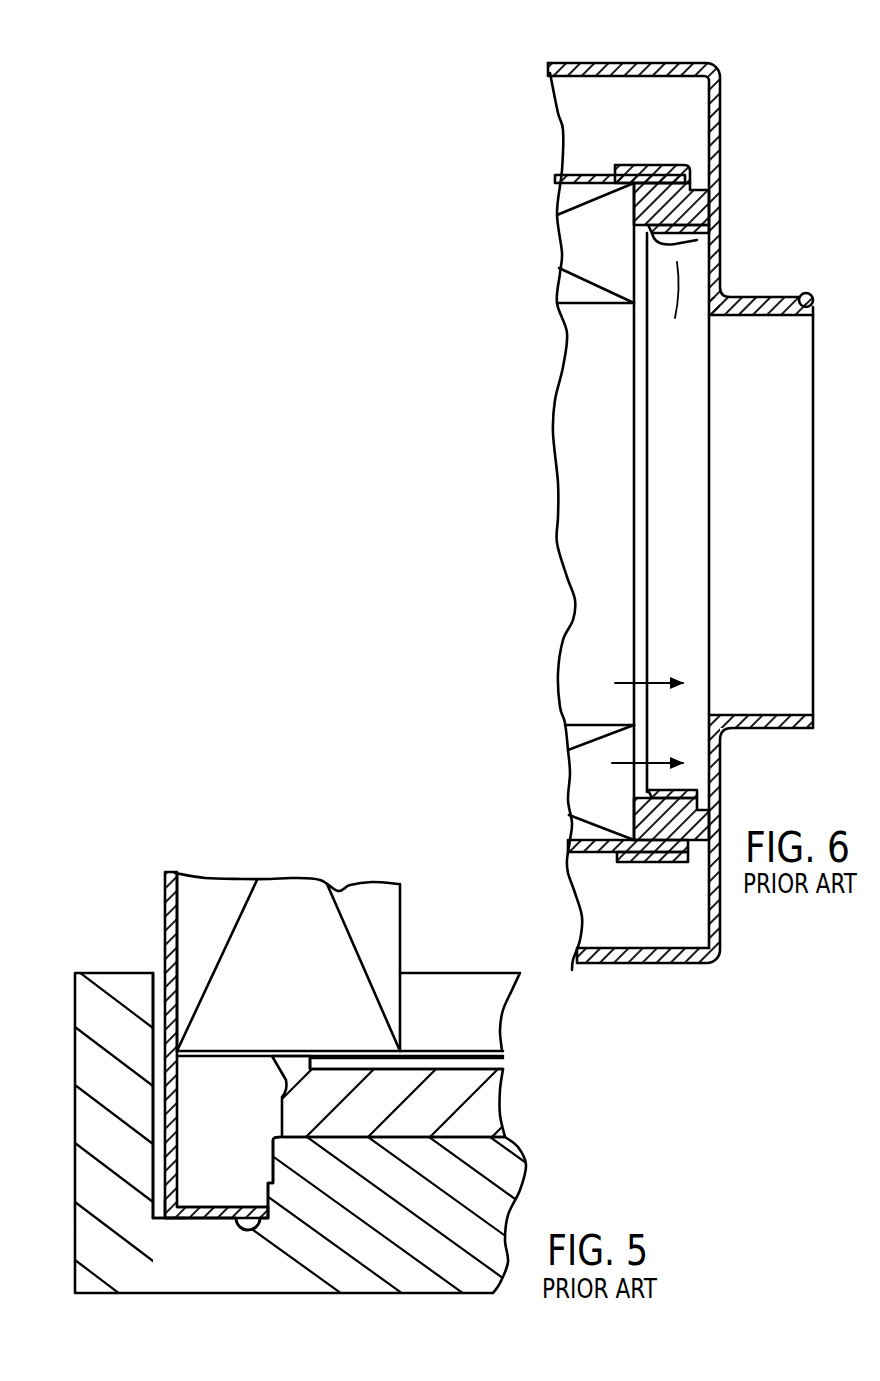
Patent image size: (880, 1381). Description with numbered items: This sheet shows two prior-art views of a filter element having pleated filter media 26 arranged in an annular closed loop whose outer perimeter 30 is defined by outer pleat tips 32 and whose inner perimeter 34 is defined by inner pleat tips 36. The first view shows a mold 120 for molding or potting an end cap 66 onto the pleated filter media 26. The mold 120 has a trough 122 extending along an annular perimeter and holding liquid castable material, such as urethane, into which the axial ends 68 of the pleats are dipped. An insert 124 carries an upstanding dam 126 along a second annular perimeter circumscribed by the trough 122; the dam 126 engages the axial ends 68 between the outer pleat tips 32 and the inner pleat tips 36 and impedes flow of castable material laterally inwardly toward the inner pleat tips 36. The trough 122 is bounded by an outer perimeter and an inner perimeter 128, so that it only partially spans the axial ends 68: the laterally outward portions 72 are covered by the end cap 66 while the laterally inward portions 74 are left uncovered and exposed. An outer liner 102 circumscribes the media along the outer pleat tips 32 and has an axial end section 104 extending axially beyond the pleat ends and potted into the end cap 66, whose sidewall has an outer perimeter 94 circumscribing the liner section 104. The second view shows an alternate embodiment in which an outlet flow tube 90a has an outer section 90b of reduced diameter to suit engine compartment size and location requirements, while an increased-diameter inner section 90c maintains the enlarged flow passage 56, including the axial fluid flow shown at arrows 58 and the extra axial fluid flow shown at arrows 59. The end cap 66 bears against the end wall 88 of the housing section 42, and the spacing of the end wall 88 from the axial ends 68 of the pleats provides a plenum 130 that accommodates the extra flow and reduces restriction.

In FIG. 6, the pleated filter media 26 is at (570, 228).
In FIG. 5, the pleated filter media 26 is at (317, 903).
In FIG. 6, the outer perimeter 30 is at (570, 193).
In FIG. 5, the outer pleat tips 32 is at (180, 1050).
In FIG. 6, the inner perimeter 34 is at (570, 297).
In FIG. 5, the inner pleat tips 36 is at (402, 1050).
In FIG. 6, the housing section 42 is at (590, 63).
In FIG. 6, the flow passage 56 is at (615, 447).
In FIG. 6, the arrows 58 is at (660, 680).
In FIG. 6, the arrows 59 is at (660, 762).
In FIG. 6, the end cap 66 is at (687, 200).
In FIG. 6, the axial ends of the pleats 68 is at (632, 267).
In FIG. 5, the axial ends of the pleats 68 is at (242, 1051).
In FIG. 5, the laterally outward portions 72 is at (217, 1058).
In FIG. 5, the laterally inward portions 74 is at (357, 1060).
In FIG. 6, the end wall 88 is at (723, 250).
In FIG. 6, the outlet flow tube 90a is at (817, 305).
In FIG. 6, the outer section 90b is at (762, 297).
In FIG. 6, the inner section 90c is at (680, 243).
In FIG. 6, the outer perimeter 94 is at (667, 165).
In FIG. 6, the outer liner 102 is at (557, 180).
In FIG. 5, the outer liner 102 is at (167, 872).
In FIG. 5, the axial end section 104 is at (160, 1218).
In FIG. 5, the mold 120 is at (76, 1140).
In FIG. 5, the trough 122 is at (208, 1218).
In FIG. 5, the insert 124 is at (477, 1095).
In FIG. 5, the dam 126 is at (152, 1177).
In FIG. 5, the inner perimeter 128 is at (307, 1183).
In FIG. 6, the plenum 130 is at (677, 304).